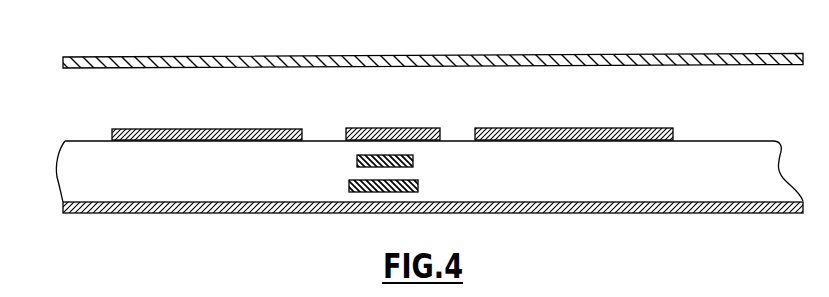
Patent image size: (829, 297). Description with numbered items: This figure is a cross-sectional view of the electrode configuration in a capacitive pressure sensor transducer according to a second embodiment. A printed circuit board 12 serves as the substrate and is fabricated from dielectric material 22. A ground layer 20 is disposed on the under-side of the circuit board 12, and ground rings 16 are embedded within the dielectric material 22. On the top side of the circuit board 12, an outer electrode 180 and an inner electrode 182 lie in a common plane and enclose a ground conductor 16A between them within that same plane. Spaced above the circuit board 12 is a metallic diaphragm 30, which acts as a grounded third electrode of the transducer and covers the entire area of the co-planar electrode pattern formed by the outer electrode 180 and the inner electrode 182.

The metallic diaphragm 30 is at (370, 56).
The printed circuit board 12 is at (706, 140).
The ground layer 20 is at (511, 213).
The dielectric material 22 is at (695, 182).
The outer electrode 180 is at (210, 128).
The ground conductor 16A is at (378, 128).
The inner electrode 182 is at (600, 128).
The ground rings 16 is at (357, 161).